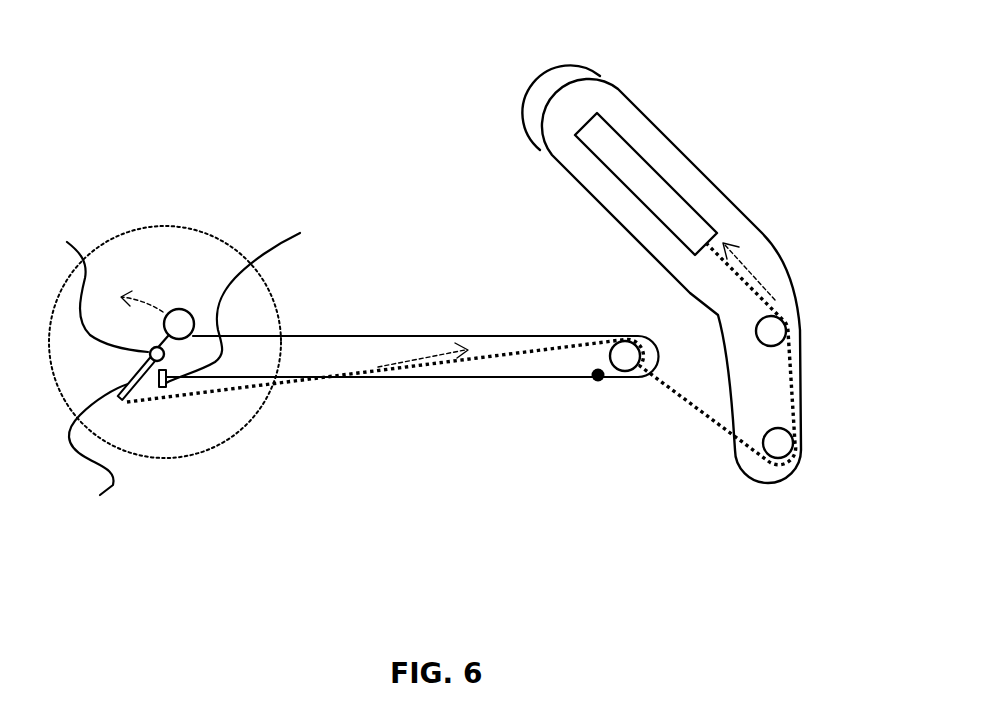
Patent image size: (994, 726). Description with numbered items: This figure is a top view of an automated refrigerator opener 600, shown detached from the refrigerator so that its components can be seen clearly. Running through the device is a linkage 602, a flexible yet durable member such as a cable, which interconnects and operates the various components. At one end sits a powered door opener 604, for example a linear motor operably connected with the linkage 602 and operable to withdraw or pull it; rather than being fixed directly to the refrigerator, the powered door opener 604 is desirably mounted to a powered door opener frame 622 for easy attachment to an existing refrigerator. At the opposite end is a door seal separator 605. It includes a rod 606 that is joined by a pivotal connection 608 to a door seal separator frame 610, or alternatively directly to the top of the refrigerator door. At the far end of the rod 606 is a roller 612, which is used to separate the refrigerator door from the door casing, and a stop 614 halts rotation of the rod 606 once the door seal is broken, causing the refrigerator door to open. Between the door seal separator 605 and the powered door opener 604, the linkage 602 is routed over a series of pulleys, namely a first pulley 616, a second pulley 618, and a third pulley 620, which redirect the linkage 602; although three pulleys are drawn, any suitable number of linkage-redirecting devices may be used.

The automated refrigerator opener 600 is at (152, 64).
The linkage 602 is at (685, 393).
The powered door opener 604 is at (638, 177).
The door seal separator 605 is at (217, 233).
The rod 606 is at (96, 458).
The pivotal connection 608 is at (87, 283).
The door seal separator frame 610 is at (382, 336).
The roller 612 is at (182, 310).
The stop 614 is at (253, 300).
The first pulley 616 is at (627, 360).
The second pulley 618 is at (783, 443).
The third pulley 620 is at (777, 331).
The powered door opener frame 622 is at (545, 117).